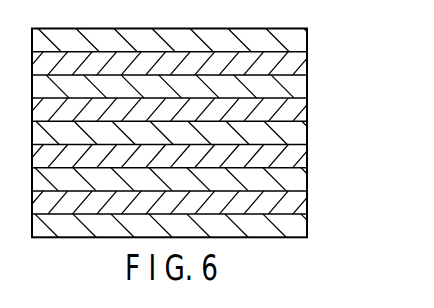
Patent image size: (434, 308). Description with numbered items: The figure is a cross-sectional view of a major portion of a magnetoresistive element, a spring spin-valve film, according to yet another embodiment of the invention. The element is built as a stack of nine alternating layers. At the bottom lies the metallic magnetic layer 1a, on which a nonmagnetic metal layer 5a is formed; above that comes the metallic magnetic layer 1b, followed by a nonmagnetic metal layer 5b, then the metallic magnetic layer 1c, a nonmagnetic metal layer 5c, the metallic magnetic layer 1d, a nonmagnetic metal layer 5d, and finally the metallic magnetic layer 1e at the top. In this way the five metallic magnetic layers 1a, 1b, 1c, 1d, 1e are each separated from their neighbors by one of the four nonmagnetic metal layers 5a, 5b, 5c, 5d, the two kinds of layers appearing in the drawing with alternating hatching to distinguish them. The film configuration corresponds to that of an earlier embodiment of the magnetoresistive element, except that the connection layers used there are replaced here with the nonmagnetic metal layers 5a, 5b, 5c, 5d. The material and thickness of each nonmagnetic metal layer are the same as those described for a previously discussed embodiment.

The metallic magnetic layer 1a is at (307, 227).
The metallic magnetic layer 1b is at (307, 180).
The metallic magnetic layer 1c is at (307, 134).
The metallic magnetic layer 1d is at (307, 86).
The metallic magnetic layer 1e is at (307, 44).
The nonmagnetic metal layer 5a is at (307, 198).
The nonmagnetic metal layer 5b is at (307, 151).
The nonmagnetic metal layer 5c is at (307, 104).
The nonmagnetic metal layer 5d is at (307, 58).